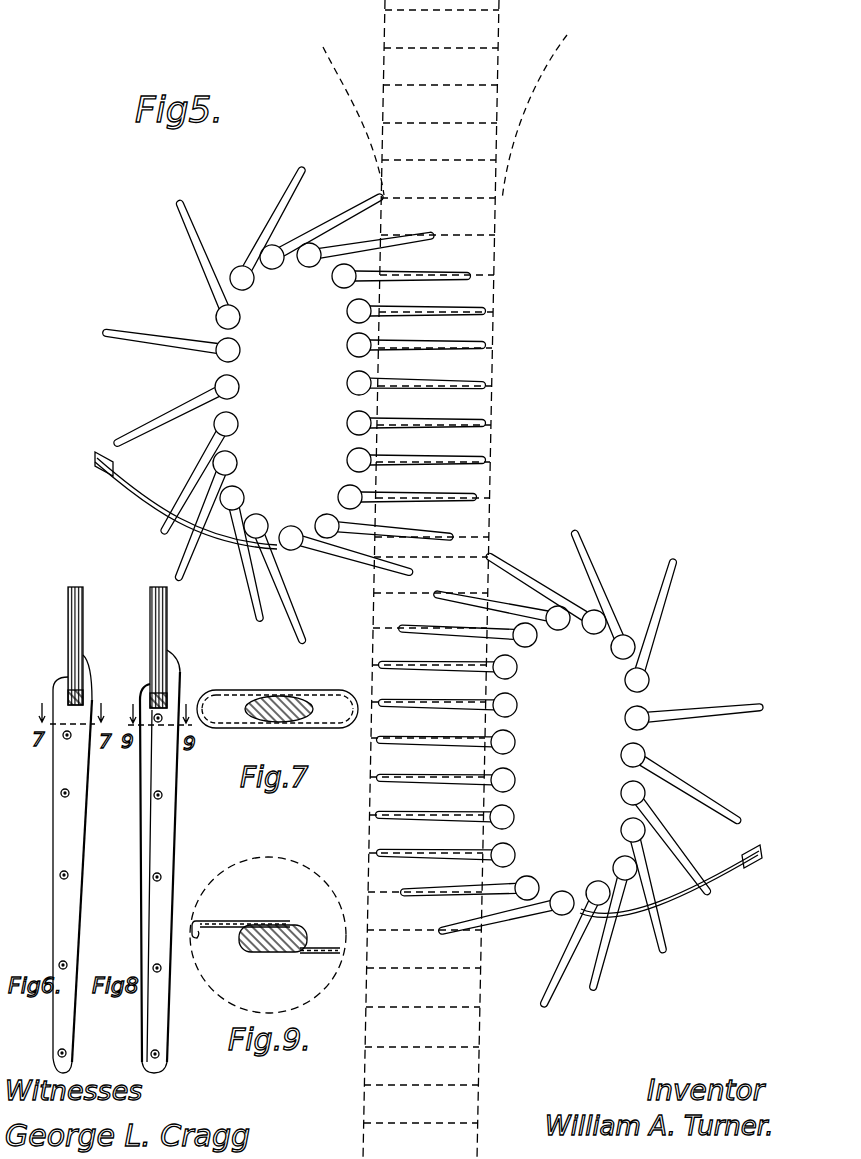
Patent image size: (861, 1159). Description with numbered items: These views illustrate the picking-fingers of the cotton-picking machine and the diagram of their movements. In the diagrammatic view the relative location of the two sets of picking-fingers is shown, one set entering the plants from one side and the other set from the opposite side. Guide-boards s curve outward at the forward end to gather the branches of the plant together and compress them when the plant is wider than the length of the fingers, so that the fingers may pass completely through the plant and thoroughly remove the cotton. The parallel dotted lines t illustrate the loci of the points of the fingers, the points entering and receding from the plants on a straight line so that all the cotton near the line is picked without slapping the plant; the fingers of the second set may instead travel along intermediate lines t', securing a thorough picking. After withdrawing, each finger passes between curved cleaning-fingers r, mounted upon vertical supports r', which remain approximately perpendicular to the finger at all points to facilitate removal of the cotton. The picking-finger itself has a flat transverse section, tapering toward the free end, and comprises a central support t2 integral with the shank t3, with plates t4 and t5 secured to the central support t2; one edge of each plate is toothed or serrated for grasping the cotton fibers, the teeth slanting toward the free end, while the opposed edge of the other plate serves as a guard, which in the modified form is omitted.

In FIG. 5, the parallel dotted lines t is at (426, 537).
In FIG. 5, the intermediate lines t' is at (412, 776).
In FIG. 6, the intermediate lines t' is at (86, 854).
In FIG. 8, the intermediate lines t' is at (175, 849).
In FIG. 7, the central support t2 is at (302, 696).
In FIG. 9, the central support t2 is at (295, 922).
In FIG. 6, the shank t3 is at (85, 612).
In FIG. 8, the shank t3 is at (168, 612).
In FIG. 6, the plate t4 is at (68, 834).
In FIG. 8, the plate t4 is at (160, 839).
In FIG. 7, the plate t4 is at (240, 690).
In FIG. 9, the plate t4 is at (241, 912).
In FIG. 8, the plate t5 is at (139, 852).
In FIG. 7, the plate t5 is at (246, 728).
In FIG. 9, the plate t5 is at (315, 952).
In FIG. 5, the guide-boards s is at (500, 234).
In FIG. 5, the cleaning-fingers r is at (427, 687).
In FIG. 5, the vertical supports r' is at (446, 659).